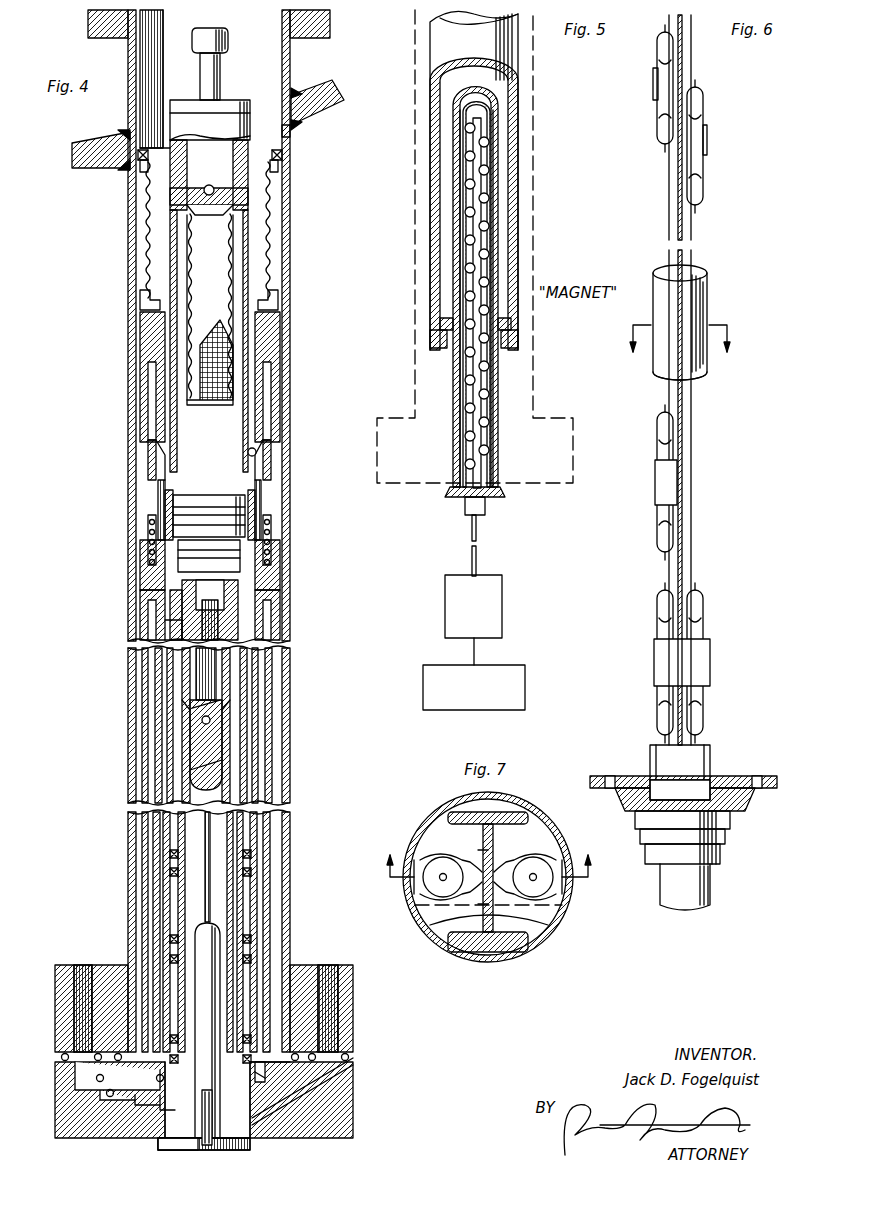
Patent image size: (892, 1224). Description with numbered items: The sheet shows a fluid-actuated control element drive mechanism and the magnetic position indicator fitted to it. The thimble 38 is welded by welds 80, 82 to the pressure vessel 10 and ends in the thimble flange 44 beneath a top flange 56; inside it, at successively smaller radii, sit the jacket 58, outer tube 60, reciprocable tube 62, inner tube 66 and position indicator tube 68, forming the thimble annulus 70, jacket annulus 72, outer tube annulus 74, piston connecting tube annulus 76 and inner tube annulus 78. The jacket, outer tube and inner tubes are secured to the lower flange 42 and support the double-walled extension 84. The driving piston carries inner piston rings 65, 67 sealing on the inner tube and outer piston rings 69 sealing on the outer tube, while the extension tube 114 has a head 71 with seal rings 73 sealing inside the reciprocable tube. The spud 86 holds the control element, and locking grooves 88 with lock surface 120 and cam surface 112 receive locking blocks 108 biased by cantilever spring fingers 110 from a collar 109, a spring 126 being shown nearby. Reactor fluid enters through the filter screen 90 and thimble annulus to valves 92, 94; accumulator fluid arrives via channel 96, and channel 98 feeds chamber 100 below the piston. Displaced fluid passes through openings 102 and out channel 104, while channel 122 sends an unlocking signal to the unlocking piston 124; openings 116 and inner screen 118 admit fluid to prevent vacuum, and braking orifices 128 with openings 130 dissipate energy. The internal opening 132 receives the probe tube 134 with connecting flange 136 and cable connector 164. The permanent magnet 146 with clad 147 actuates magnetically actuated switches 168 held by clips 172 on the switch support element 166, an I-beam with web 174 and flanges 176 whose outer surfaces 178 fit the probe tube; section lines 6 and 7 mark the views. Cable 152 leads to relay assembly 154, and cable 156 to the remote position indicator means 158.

In FIG. 4, the pressure vessel 10 is at (318, 105).
In FIG. 4, the thimble 38 is at (290, 208).
In FIG. 5, the thimble 38 is at (533, 105).
In FIG. 4, the lower flange 42 is at (345, 1098).
In FIG. 4, the thimble flange 44 is at (346, 984).
In FIG. 5, the thimble flange 44 is at (537, 415).
In FIG. 4, the top flange 56 is at (330, 27).
In FIG. 4, the jacket 58 is at (272, 630).
In FIG. 4, the outer tube 60 is at (270, 660).
In FIG. 4, the reciprocable tube 62 is at (250, 246).
In FIG. 5, the reciprocable tube 62 is at (513, 145).
In FIG. 4, the inner piston ring 65 is at (255, 872).
In FIG. 4, the inner tube 66 is at (232, 757).
In FIG. 4, the inner piston ring 67 is at (250, 1040).
In FIG. 4, the position indicator tube 68 is at (210, 902).
In FIG. 5, the position indicator tube 68 is at (497, 177).
In FIG. 4, the outer piston rings 69 is at (252, 940).
In FIG. 4, the thimble annulus 70 is at (144, 632).
In FIG. 4, the head 71 is at (170, 503).
In FIG. 4, the jacket annulus 72 is at (145, 680).
In FIG. 4, the seal rings 73 is at (200, 555).
In FIG. 4, the outer tube annulus 74 is at (158, 702).
In FIG. 4, the piston connecting tube annulus 76 is at (170, 726).
In FIG. 4, the inner tube annulus 78 is at (188, 750).
In FIG. 4, the weld 80 is at (292, 132).
In FIG. 4, the weld 82 is at (125, 137).
In FIG. 4, the double-walled extension 84 is at (272, 568).
In FIG. 4, the spud 86 is at (228, 40).
In FIG. 4, the locking grooves 88 is at (250, 450).
In FIG. 4, the filter screen 90 is at (146, 242).
In FIG. 4, the valve 92 is at (98, 1079).
In FIG. 4, the valve 94 is at (110, 1097).
In FIG. 4, the channel 96 is at (82, 1010).
In FIG. 4, the channel 98 is at (138, 1100).
In FIG. 4, the chamber 100 is at (165, 1102).
In FIG. 4, the openings 102 is at (224, 712).
In FIG. 4, the channel 104 is at (280, 1100).
In FIG. 4, the locking blocks 108 is at (258, 455).
In FIG. 4, the collar 109 is at (256, 507).
In FIG. 4, the cantilever spring fingers 110 is at (262, 481).
In FIG. 4, the cam surface 112 is at (252, 460).
In FIG. 4, the extension tube 114 is at (180, 638).
In FIG. 4, the openings 116 is at (180, 197).
In FIG. 4, the inner screen 118 is at (188, 270).
In FIG. 4, the lock surface 120 is at (160, 455).
In FIG. 4, the channel 122 is at (270, 1080).
In FIG. 4, the unlocking piston 124 is at (152, 392).
In FIG. 4, the spring 126 is at (272, 538).
In FIG. 4, the braking orifices 128 is at (220, 720).
In FIG. 4, the openings 130 is at (218, 690).
In FIG. 4, the internal opening 132 is at (205, 935).
In FIG. 4, the probe tube 134 is at (207, 1145).
In FIG. 5, the probe tube 134 is at (462, 285).
In FIG. 6, the probe tube 134 is at (712, 298).
In FIG. 7, the probe tube 134 is at (560, 905).
In FIG. 4, the connecting flange 136 is at (245, 1148).
In FIG. 5, the connecting flange 136 is at (500, 492).
In FIG. 6, the connecting flange 136 is at (712, 776).
In FIG. 5, the permanent magnet 146 is at (504, 322).
In FIG. 5, the corrosion-resistant clad 147 is at (505, 338).
In FIG. 5, the cable 152 is at (478, 560).
In FIG. 6, the cable 152 is at (695, 878).
In FIG. 5, the relay assembly 154 is at (445, 604).
In FIG. 5, the cable 156 is at (475, 648).
In FIG. 5, the remote position indicator means 158 is at (520, 685).
In FIG. 5, the cable connector 164 is at (478, 510).
In FIG. 6, the cable connector 164 is at (722, 836).
In FIG. 5, the switch support element 166 is at (472, 355).
In FIG. 6, the switch support element 166 is at (691, 425).
In FIG. 7, the switch support element 166 is at (488, 915).
In FIG. 5, the magnetically actuated switches 168 is at (480, 130).
In FIG. 6, the magnetically actuated switches 168 is at (658, 45).
In FIG. 7, the magnetically actuated switches 168 is at (440, 852).
In FIG. 6, the clips 172 is at (708, 135).
In FIG. 7, the clips 172 is at (540, 852).
In FIG. 7, the web 174 is at (548, 925).
In FIG. 7, the flanges 176 is at (460, 815).
In FIG. 7, the outer surfaces 178 is at (520, 815).
In FIG. 7, the section line 6- 6 is at (488, 863).
In FIG. 6, the section line 7- 7 is at (680, 339).